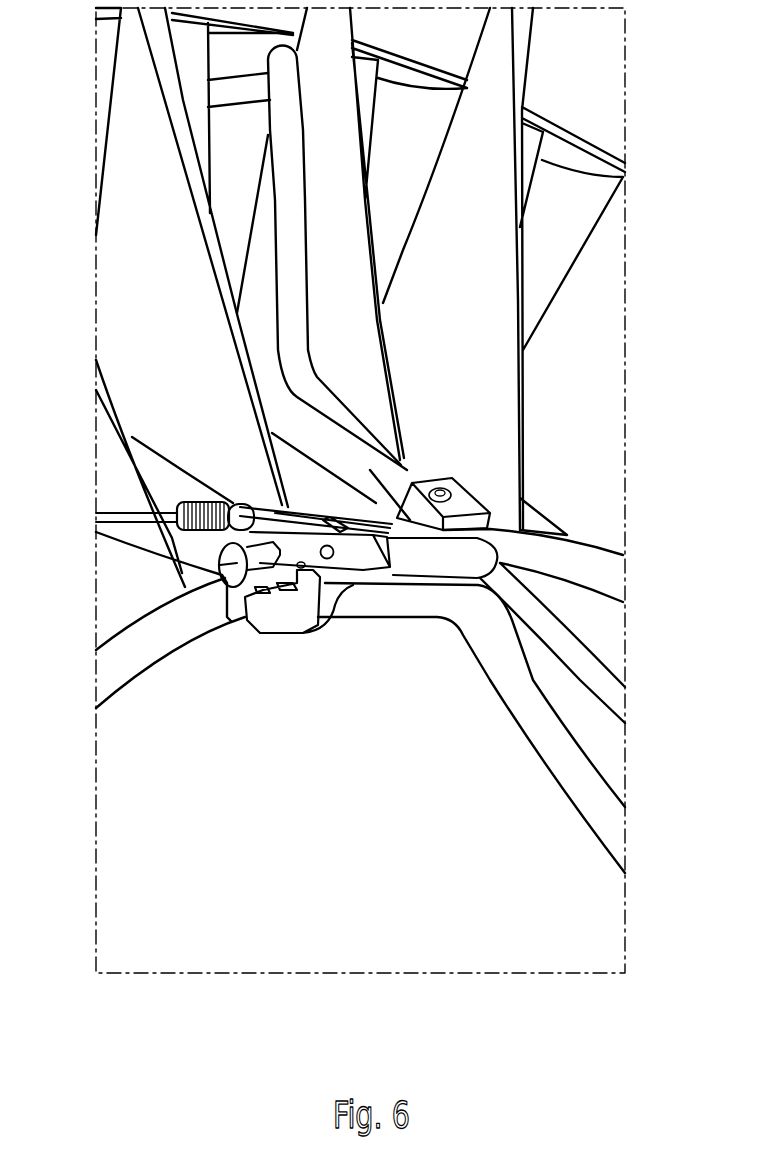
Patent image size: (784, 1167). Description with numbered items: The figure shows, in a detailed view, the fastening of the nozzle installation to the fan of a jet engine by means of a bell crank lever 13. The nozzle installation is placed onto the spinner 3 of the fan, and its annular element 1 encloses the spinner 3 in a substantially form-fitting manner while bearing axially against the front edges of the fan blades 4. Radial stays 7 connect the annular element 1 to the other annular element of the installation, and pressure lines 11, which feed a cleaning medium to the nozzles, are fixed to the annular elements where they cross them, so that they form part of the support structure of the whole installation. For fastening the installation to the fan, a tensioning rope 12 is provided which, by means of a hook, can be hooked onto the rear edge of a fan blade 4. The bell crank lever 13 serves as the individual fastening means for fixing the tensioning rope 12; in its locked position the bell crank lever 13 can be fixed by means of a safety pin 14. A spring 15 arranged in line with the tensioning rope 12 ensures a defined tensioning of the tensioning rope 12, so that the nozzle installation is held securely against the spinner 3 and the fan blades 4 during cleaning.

The annular element 1 is at (142, 653).
The spinner 3 is at (356, 807).
The fan blades 4 is at (523, 440).
The radial stays 7 is at (547, 740).
The pressure lines 11 is at (600, 667).
The tensioning ropes 12 is at (127, 514).
The bell crank lever 13 is at (343, 553).
The safety pin 14 is at (220, 573).
The spring 15 is at (205, 503).